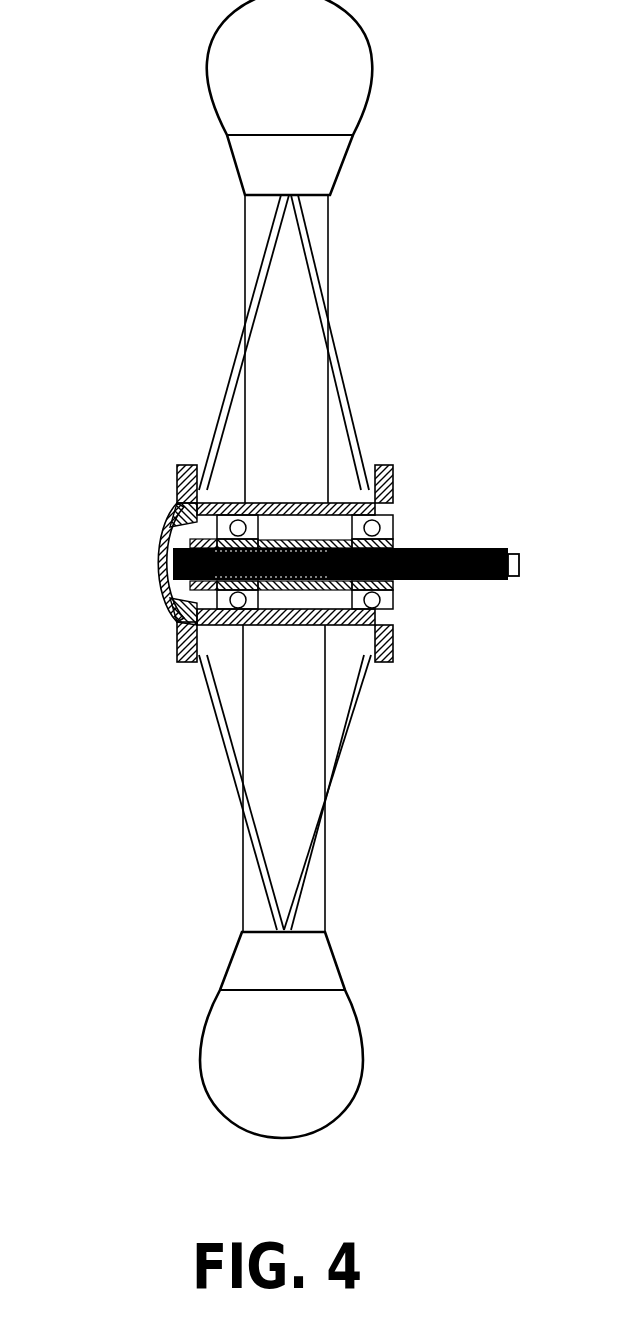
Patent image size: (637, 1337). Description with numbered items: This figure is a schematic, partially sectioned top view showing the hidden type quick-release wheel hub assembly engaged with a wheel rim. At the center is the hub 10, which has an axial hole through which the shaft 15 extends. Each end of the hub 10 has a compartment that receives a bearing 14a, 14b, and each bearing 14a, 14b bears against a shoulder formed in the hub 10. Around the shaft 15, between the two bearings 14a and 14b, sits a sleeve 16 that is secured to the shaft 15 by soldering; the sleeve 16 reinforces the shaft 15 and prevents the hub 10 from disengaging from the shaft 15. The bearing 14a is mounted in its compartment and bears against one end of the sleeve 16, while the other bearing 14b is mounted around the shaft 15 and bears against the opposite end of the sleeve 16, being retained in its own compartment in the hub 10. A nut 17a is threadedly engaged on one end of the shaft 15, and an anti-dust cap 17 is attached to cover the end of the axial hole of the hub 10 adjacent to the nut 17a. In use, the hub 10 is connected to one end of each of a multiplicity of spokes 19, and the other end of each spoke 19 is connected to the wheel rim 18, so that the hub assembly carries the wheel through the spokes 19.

The hub 10 is at (290, 507).
The bearing 14a is at (225, 622).
The bearing 14b is at (393, 512).
The shaft 15 is at (452, 582).
The sleeve 16 is at (317, 583).
The anti-dust cap 17 is at (167, 582).
The nut 17a is at (170, 597).
The wheel rim 18 is at (353, 135).
The spoke 19 is at (332, 335).